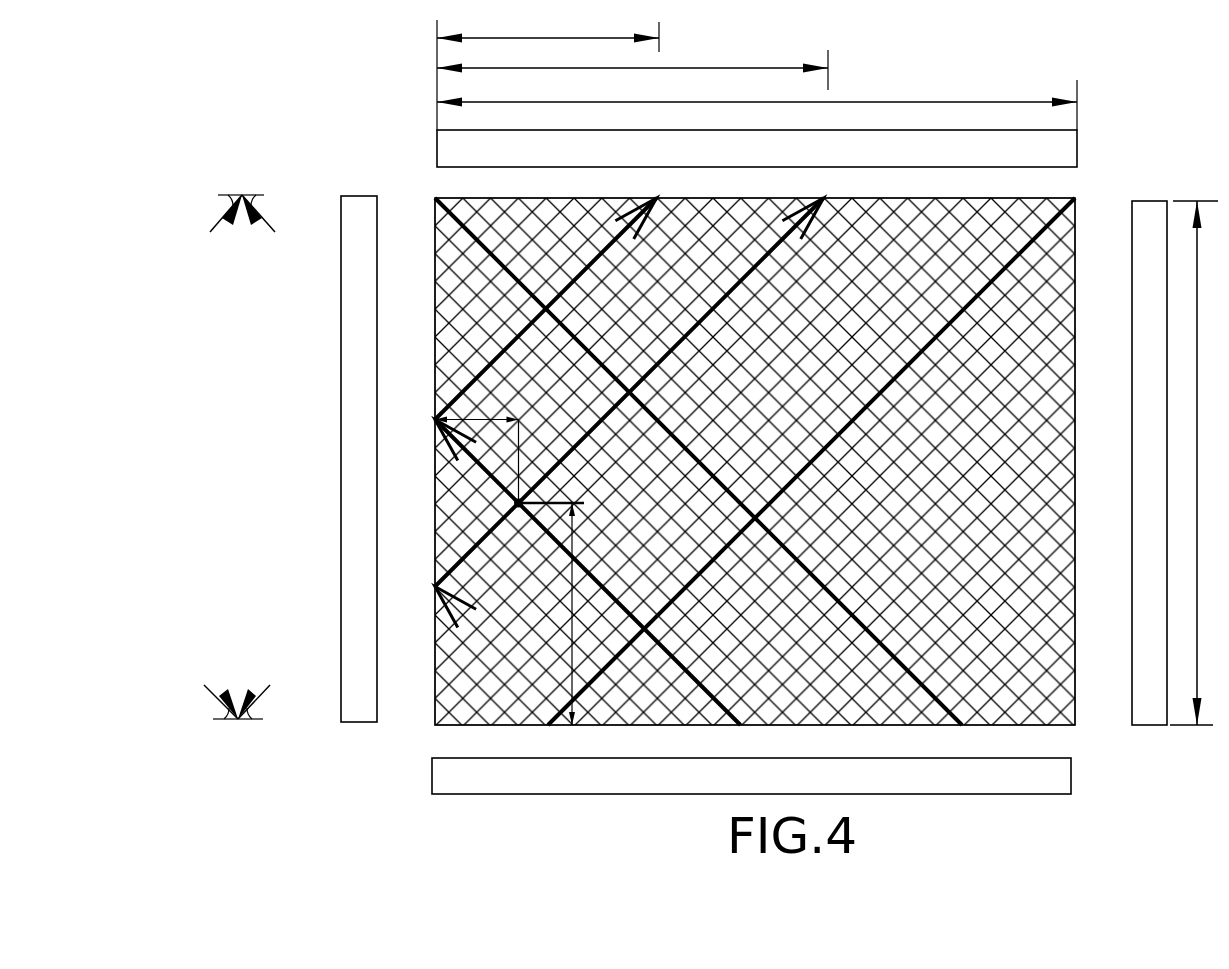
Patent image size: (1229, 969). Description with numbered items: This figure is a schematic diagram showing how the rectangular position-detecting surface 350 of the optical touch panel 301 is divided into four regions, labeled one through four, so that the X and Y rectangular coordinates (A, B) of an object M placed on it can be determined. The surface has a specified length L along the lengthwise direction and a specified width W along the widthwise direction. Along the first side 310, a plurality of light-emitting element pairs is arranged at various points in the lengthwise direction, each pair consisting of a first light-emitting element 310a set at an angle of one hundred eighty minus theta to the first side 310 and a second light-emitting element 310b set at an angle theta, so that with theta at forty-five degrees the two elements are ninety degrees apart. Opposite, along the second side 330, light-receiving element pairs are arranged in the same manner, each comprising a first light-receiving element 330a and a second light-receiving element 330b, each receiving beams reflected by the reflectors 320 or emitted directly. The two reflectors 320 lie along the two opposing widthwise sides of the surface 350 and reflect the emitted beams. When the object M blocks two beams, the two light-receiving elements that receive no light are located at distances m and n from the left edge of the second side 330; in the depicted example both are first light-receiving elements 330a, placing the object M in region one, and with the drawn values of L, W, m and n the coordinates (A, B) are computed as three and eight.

The optical touch panel 301 is at (958, 86).
The first side 310 is at (432, 773).
The first light-emitting element 310a is at (206, 688).
The second light-emitting element 310b is at (273, 688).
The reflector 320 is at (341, 414).
The second side 330 is at (1080, 152).
The first light-receiving element 330a is at (210, 229).
The second light-receiving element 330b is at (275, 229).
The rectangular position-detecting surface 350 is at (1077, 200).